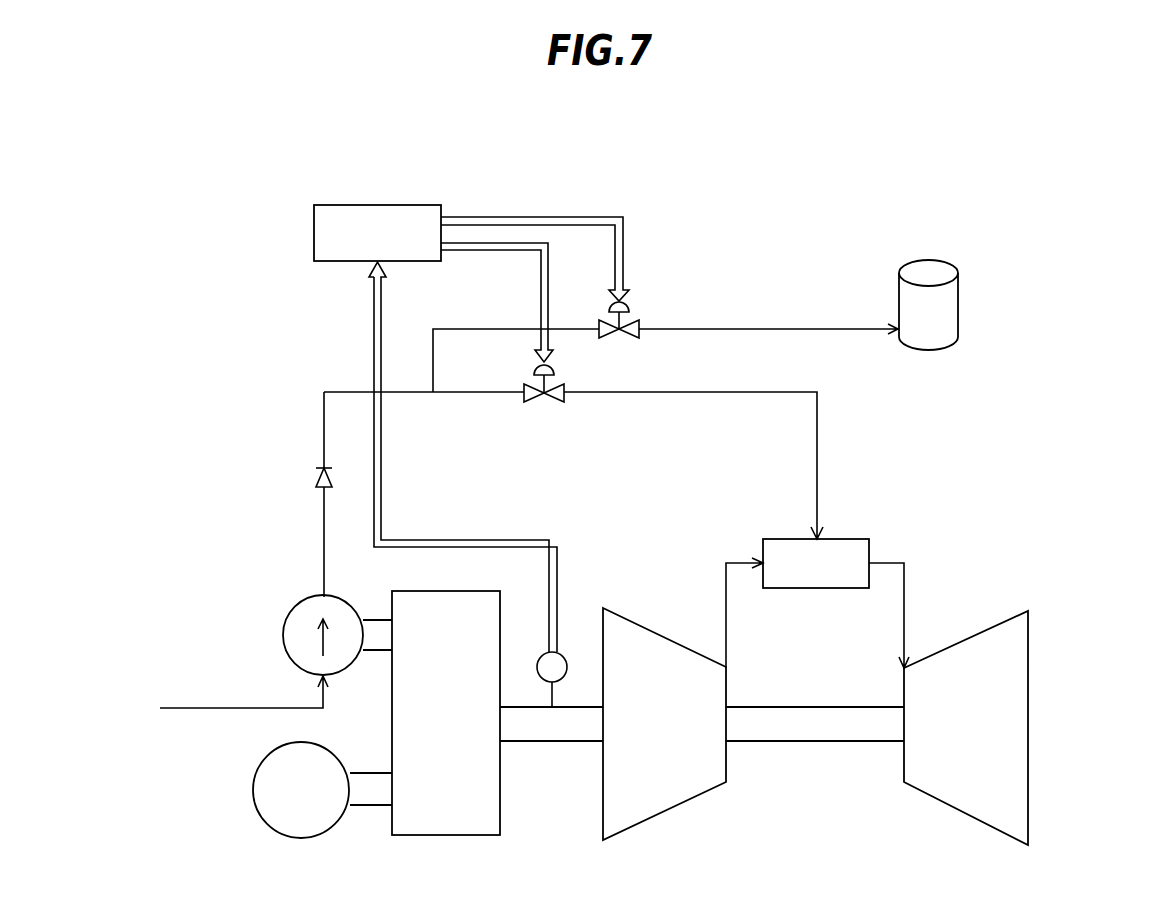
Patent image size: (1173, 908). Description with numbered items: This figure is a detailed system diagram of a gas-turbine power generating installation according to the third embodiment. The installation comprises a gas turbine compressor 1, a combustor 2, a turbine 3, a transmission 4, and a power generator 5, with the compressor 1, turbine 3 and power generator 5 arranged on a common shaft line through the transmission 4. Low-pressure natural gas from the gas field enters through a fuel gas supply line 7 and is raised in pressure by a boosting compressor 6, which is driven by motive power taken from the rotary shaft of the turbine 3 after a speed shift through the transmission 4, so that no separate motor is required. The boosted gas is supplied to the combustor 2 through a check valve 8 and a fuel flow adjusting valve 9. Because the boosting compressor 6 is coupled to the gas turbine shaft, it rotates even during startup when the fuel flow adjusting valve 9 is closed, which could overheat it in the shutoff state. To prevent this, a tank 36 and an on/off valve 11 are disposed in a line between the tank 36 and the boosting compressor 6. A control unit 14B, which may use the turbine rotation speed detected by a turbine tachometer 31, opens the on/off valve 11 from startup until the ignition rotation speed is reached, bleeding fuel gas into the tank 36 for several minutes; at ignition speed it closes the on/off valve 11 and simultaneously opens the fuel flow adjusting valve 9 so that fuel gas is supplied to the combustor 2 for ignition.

The gas turbine compressor 1 is at (690, 800).
The combustor 2 is at (851, 538).
The turbine 3 is at (940, 802).
The transmission 4 is at (444, 836).
The power generator 5 is at (316, 838).
The boosting compressor 6 is at (311, 596).
The fuel gas supply line 7 is at (241, 706).
The check valve 8 is at (319, 467).
The fuel flow adjusting valve 9 is at (547, 400).
The on/off valve 11 is at (624, 338).
The control unit 14B is at (398, 205).
The turbine tachometer 31 is at (543, 655).
The tank 36 is at (958, 312).